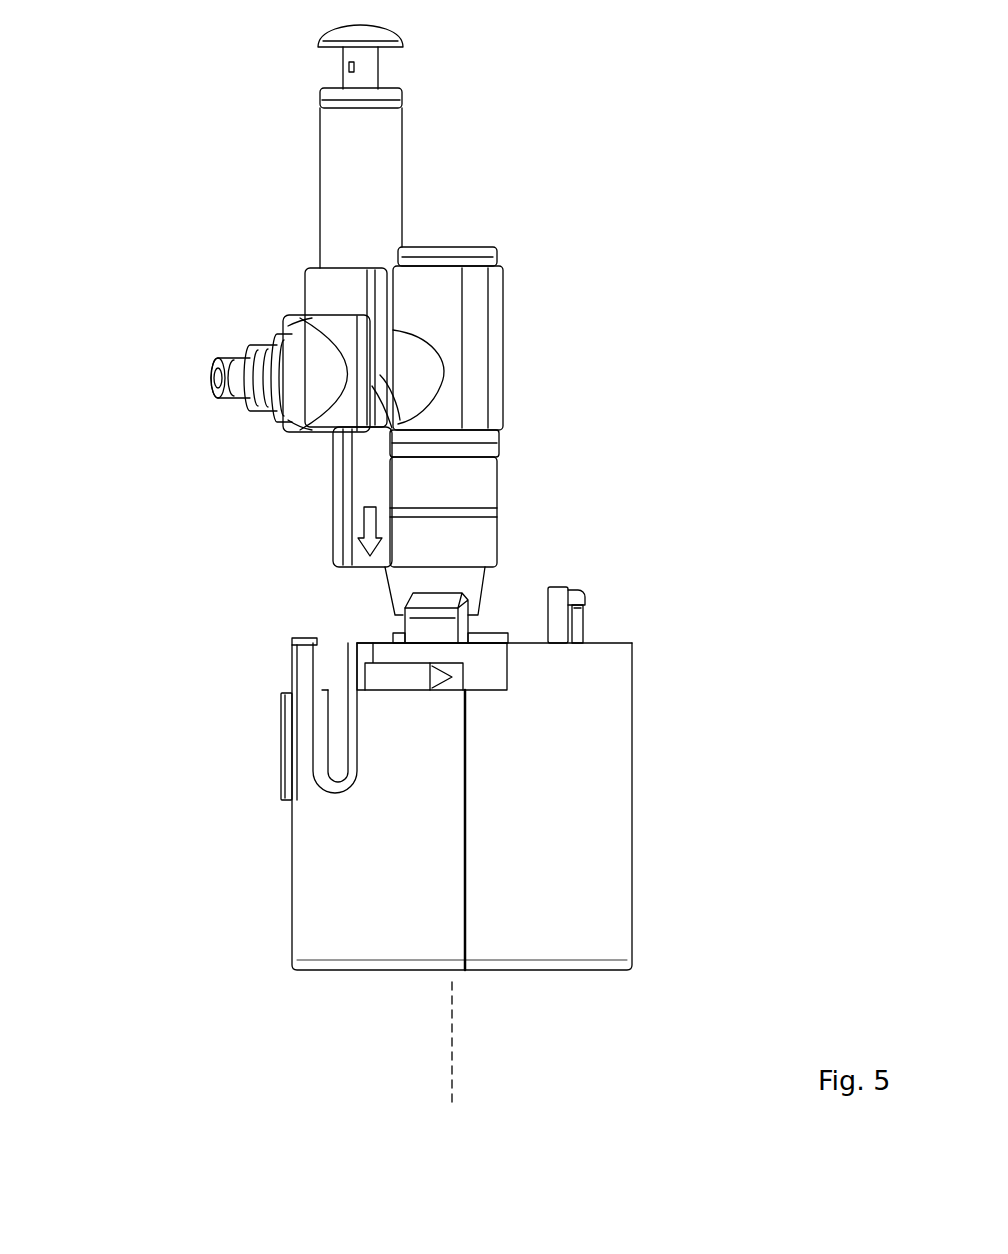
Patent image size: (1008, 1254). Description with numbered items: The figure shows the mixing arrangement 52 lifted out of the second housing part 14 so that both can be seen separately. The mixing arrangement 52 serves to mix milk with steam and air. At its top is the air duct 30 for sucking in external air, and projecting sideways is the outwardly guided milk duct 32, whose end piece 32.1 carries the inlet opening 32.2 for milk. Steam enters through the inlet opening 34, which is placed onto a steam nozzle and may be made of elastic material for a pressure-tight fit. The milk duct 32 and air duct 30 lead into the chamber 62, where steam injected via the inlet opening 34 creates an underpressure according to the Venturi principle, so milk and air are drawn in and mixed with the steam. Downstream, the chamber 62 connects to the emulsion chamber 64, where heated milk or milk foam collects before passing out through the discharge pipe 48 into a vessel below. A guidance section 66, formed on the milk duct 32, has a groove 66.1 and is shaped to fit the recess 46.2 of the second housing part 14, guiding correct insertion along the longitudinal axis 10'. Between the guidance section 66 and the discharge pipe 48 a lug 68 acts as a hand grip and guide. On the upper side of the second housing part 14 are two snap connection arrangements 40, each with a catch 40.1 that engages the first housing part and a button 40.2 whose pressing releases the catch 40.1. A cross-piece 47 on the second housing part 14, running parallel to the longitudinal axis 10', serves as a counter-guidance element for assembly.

The air duct 30 is at (327, 143).
The mixing arrangement 52 is at (351, 375).
The inlet opening 34 is at (478, 247).
The guidance section 66 is at (359, 344).
The groove 66.1 is at (373, 372).
The milk duct 32 is at (173, 373).
The end piece 32.1 is at (227, 358).
The inlet opening for milk 32.2 is at (213, 378).
The chamber 62 is at (450, 380).
The emulsion chamber 64 is at (490, 483).
The lug 68 is at (355, 516).
The discharge pipe 48 is at (485, 615).
The snap connection arrangement 40 is at (449, 704).
The catch 40.1 is at (583, 608).
The recess 46.2 is at (335, 668).
The button 40.2 is at (412, 680).
The cross-piece 47 is at (278, 748).
The second housing part 14 is at (638, 928).
The longitudinal axis 10' is at (490, 1042).